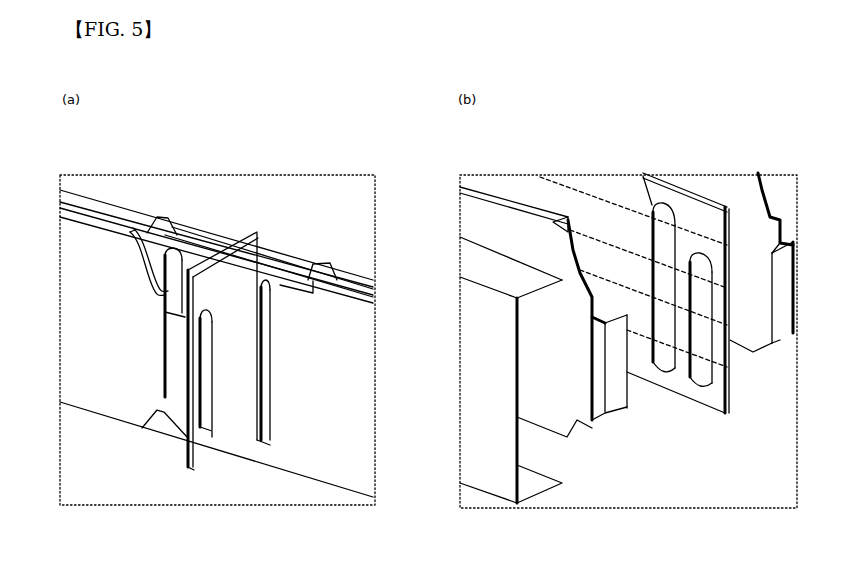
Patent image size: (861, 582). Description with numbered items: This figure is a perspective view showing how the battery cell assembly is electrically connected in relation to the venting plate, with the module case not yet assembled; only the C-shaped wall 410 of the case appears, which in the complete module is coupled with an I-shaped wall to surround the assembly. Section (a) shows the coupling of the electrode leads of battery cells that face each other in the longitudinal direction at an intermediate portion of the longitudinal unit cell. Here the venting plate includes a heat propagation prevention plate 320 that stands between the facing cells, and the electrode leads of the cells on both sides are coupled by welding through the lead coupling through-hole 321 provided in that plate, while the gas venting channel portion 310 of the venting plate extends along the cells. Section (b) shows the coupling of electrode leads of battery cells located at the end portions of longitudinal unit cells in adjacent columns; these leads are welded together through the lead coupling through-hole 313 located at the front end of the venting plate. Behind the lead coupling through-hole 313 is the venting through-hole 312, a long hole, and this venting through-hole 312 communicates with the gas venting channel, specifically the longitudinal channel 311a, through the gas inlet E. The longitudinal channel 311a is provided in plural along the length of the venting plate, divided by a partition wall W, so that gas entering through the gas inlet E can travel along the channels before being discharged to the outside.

The gas venting channel portion of venting plate 310 is at (280, 260).
The longitudinal channel 311a is at (613, 227).
The venting through-hole 312 is at (667, 353).
The lead coupling through-hole 313 is at (703, 370).
The heat propagation prevention plate 320 is at (223, 322).
The lead coupling through-hole 321 is at (218, 428).
The C-shaped wall 410 is at (485, 465).
The partition wall W is at (568, 180).
The gas inlet E is at (658, 237).